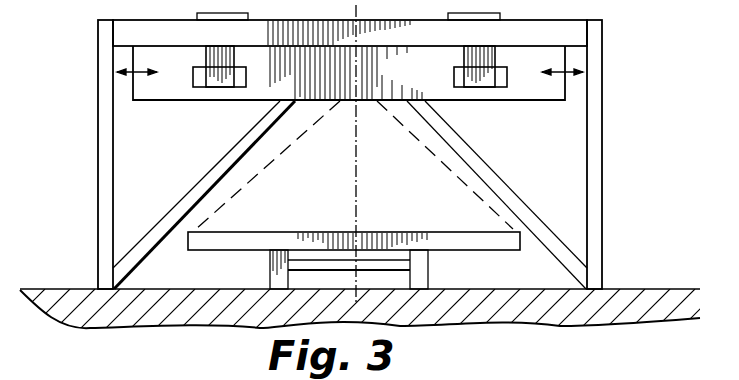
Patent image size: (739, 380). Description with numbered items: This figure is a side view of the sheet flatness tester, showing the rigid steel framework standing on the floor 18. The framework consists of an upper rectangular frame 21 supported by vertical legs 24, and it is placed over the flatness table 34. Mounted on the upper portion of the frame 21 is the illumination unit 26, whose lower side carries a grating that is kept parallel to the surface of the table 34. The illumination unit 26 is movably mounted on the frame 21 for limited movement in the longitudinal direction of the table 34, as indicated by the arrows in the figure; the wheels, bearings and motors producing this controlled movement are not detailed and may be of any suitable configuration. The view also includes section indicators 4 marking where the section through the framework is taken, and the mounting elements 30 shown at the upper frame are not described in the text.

The floor 18 is at (470, 270).
The upper rectangular frame 21 is at (432, 8).
The vertical legs 24 is at (98, 171).
The illumination unit 26 is at (565, 88).
The slide brackets 30 is at (384, 74).
The flatness table 34 is at (336, 206).
The section line 4- 4 is at (159, 80).